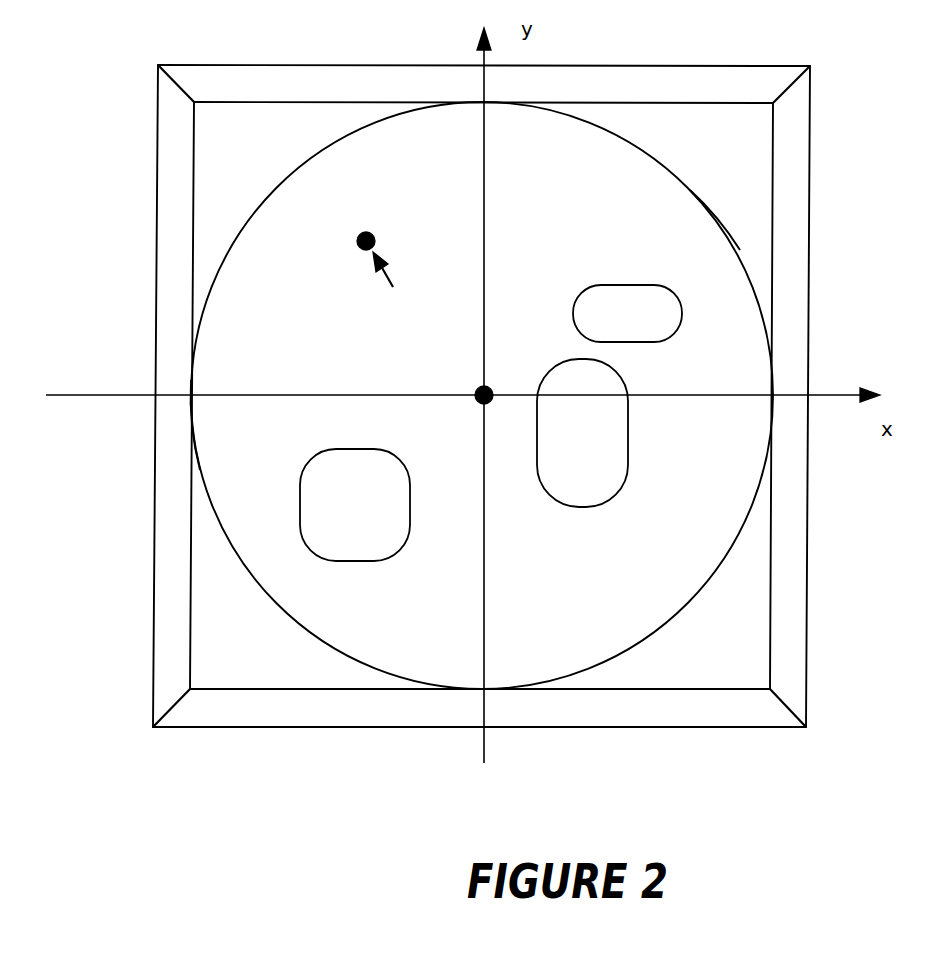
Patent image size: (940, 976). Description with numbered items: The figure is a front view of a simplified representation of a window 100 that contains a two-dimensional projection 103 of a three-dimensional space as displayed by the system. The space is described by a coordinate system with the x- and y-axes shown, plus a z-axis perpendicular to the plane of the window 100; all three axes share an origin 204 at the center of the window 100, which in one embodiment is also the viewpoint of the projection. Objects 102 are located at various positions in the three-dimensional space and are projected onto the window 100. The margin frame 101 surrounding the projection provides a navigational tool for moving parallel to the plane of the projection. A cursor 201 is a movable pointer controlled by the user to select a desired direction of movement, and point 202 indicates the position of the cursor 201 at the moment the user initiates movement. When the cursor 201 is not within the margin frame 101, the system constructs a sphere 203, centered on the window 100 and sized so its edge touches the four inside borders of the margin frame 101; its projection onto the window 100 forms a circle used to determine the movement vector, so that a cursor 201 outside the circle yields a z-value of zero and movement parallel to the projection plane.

The window 100 is at (836, 682).
The margin frame 101 is at (177, 228).
The objects 102 is at (491, 423).
The two-dimensional projection 103 is at (228, 447).
The cursor 201 is at (377, 282).
The point 202 is at (363, 225).
The sphere 203 is at (712, 213).
The origin 204 is at (482, 392).